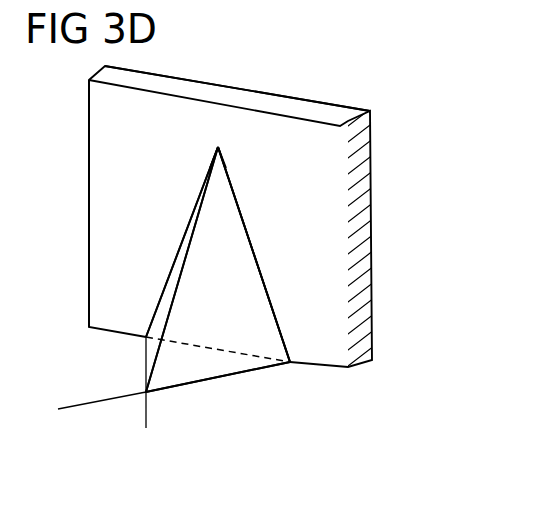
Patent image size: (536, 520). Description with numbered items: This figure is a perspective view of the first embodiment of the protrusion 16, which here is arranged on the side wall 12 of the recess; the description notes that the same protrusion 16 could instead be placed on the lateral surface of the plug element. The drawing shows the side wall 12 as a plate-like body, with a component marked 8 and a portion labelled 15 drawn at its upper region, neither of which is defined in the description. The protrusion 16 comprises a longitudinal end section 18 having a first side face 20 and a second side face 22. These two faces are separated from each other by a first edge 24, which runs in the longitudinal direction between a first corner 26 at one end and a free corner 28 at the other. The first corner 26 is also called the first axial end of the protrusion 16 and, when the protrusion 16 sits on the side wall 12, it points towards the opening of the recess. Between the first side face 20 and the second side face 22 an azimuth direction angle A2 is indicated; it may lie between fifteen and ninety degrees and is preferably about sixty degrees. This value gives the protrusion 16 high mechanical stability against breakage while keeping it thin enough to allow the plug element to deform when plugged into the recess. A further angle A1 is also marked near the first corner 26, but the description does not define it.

The plate 8 is at (313, 110).
The side wall 12 is at (106, 138).
The top surface of plate 15 is at (192, 82).
The protrusion 16 is at (166, 226).
The longitudinal end section 18 is at (252, 247).
The first side face 20 is at (172, 282).
The second side face 22 is at (267, 320).
The first edge 24 is at (167, 313).
The first corner 26 is at (216, 147).
The free corner 28 is at (146, 392).
The opening angle A1 is at (232, 206).
The azimuth direction angle A2 is at (134, 420).